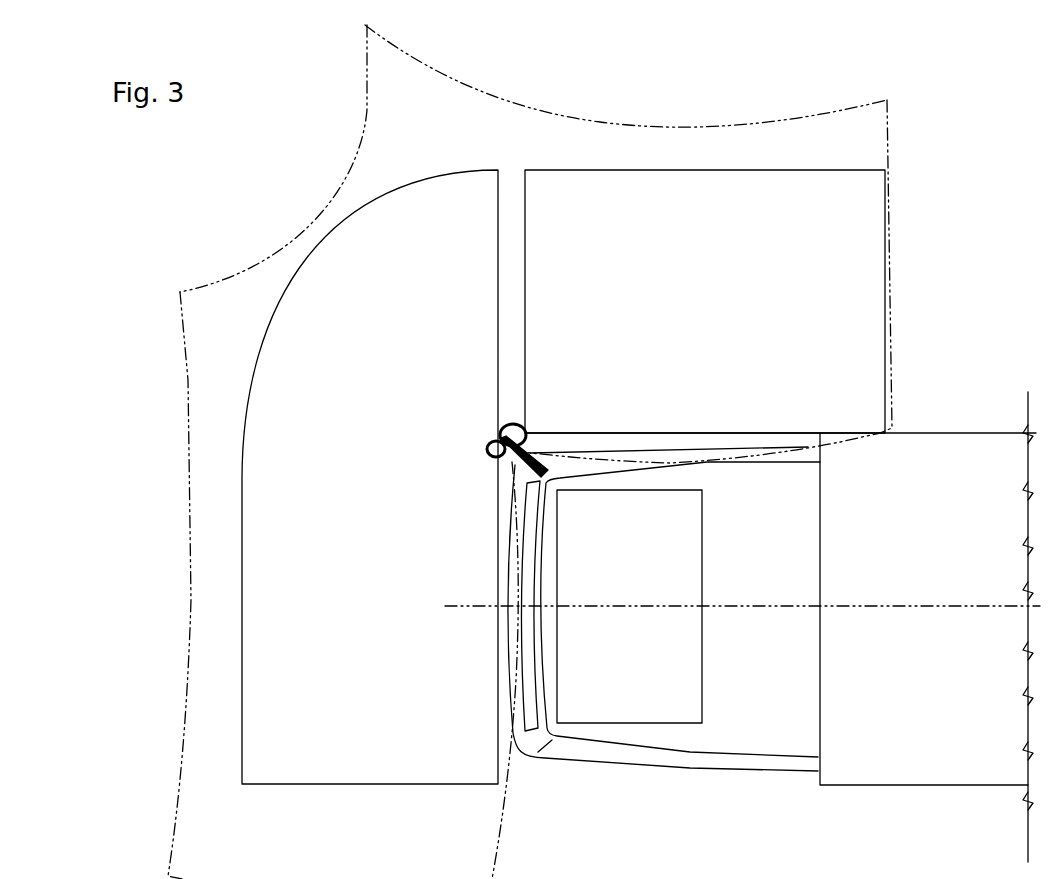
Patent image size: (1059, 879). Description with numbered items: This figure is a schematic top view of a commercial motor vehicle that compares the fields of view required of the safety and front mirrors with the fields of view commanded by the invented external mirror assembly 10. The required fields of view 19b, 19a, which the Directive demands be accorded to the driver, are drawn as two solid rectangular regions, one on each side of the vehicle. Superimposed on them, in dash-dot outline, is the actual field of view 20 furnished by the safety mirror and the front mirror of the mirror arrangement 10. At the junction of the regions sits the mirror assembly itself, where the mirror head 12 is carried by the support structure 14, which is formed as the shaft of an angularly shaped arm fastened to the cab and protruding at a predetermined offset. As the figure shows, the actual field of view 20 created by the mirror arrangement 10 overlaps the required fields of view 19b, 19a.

The external mirror assembly 10 is at (468, 476).
The mirror head 12 is at (500, 437).
The support structure 14 is at (503, 457).
The field of view 19a is at (885, 337).
The field of view 19b is at (242, 684).
The actual field of view 20 is at (588, 117).